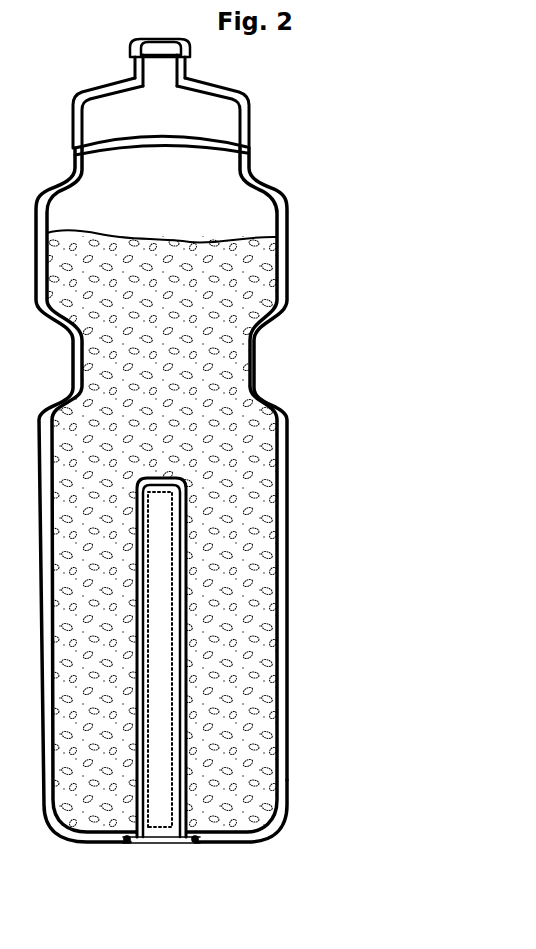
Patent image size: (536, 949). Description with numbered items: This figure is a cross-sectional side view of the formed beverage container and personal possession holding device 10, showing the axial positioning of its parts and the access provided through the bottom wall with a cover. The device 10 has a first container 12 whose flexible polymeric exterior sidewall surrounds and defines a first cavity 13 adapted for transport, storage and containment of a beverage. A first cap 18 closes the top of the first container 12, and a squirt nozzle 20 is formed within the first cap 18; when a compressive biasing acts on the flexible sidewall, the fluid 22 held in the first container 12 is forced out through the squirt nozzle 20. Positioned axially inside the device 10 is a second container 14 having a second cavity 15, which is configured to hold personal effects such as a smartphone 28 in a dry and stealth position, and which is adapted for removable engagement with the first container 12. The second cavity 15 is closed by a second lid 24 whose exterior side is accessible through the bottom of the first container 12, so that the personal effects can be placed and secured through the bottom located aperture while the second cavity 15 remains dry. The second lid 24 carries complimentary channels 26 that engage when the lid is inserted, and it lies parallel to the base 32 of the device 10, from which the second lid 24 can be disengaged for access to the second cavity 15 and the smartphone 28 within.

The formed beverage container and personal possession holding device 10 is at (219, 521).
The first container 12 is at (287, 200).
The first cavity 13 is at (242, 220).
The second container 14 is at (187, 478).
The second cavity 15 is at (185, 573).
The first cap 18 is at (250, 115).
The squirt nozzle 20 is at (155, 35).
The fluid 22 is at (247, 287).
The second lid 24 is at (167, 845).
The complimentary channels 26 is at (127, 843).
The smartphone 28 is at (163, 623).
The base 32 is at (240, 845).